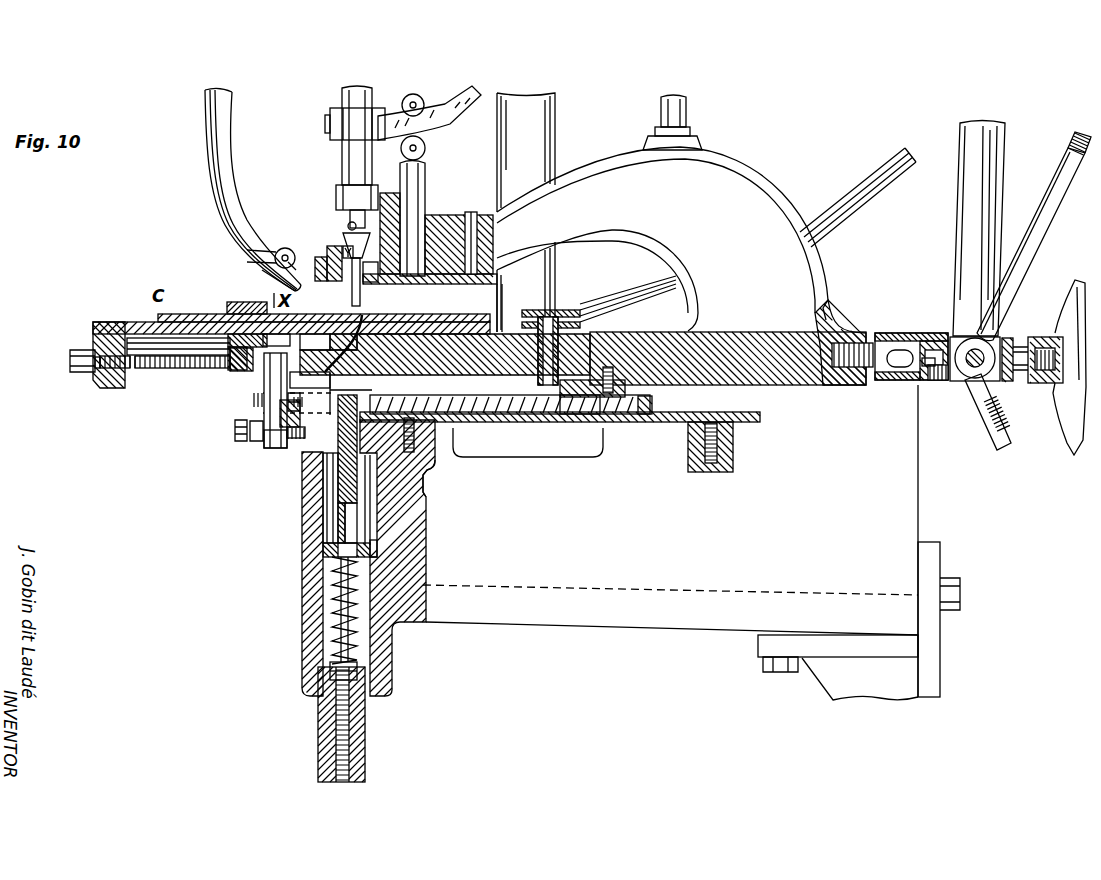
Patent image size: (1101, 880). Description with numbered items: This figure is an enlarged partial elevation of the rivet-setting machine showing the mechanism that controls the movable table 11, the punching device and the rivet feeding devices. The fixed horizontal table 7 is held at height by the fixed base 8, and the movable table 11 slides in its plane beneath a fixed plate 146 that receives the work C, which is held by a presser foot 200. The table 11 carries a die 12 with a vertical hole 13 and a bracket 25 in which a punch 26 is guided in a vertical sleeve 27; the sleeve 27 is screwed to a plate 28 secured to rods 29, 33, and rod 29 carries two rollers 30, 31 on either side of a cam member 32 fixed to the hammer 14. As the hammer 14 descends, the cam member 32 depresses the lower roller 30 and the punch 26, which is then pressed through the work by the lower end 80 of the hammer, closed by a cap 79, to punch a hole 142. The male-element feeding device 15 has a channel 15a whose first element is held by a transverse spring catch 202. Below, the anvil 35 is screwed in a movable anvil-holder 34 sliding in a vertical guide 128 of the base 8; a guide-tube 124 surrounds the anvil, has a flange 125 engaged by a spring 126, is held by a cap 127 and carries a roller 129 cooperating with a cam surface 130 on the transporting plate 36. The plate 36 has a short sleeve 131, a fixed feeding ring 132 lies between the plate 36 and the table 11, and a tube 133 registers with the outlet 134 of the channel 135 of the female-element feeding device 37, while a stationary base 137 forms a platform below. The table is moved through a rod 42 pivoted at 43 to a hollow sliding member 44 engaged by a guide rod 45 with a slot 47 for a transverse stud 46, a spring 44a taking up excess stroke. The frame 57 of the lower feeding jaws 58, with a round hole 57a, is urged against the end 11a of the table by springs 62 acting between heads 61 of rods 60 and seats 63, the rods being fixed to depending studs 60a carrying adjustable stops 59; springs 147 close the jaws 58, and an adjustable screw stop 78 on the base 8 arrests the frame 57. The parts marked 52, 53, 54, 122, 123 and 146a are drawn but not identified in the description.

The horizontal table 7 is at (838, 333).
The fixed base 8 is at (97, 336).
The movable table 11 is at (436, 330).
The end of movable table 11a is at (370, 362).
The die 12 is at (366, 300).
The vertical hole 13 is at (352, 304).
The hammer 14 is at (352, 158).
The rivet feeding device 15 is at (207, 137).
The channel 15a is at (262, 268).
The bracket 25 is at (598, 185).
The punch 26 is at (352, 291).
The vertical sleeve 27 is at (396, 276).
The plate 28 is at (428, 282).
The rod 29 is at (412, 202).
The lower roller 30 is at (426, 149).
The upper roller 31 is at (420, 98).
The cam member 32 is at (468, 93).
The rod 33 is at (468, 274).
The anvil-holder 34 is at (330, 729).
The anvil 35 is at (330, 510).
The transporting plate 36 is at (436, 395).
The rivet feeding device 37 is at (848, 196).
The rod of adjustable length 42 is at (1000, 403).
The pivot 43 is at (973, 365).
The hollow sliding member 44 is at (940, 384).
The spring 44a is at (932, 372).
The guide rod 45 is at (925, 345).
The transverse stud 46 is at (898, 350).
The slot 47 is at (912, 380).
The hand lever 52 is at (1042, 215).
The collar 53 is at (1008, 338).
The hand wheel 54 is at (1075, 317).
The frame 57 is at (265, 358).
The round hole 57a is at (267, 378).
The lower feeding jaws 58 is at (298, 333).
The adjustable stops 59 is at (305, 431).
The rods 60 is at (528, 415).
The depending studs 60a is at (273, 443).
The head 61 is at (650, 403).
The spring 62 is at (585, 415).
The seat 63 is at (326, 381).
The adjustable screw stop 78 is at (84, 372).
The cap 79 is at (338, 190).
The lower end of hammer 80 is at (348, 225).
The roller 122 is at (282, 248).
The block 123 is at (316, 258).
The guide-tube 124 is at (348, 517).
The flange 125 is at (330, 553).
The spring 126 is at (333, 622).
The cap 127 is at (372, 546).
The vertical guide 128 is at (430, 491).
The roller 129 is at (340, 478).
The cam surface 130 is at (300, 412).
The short sleeve 131 is at (345, 392).
The fixed feeding ring 132 is at (570, 375).
The tube 133 is at (538, 352).
The outlet 134 is at (548, 312).
The channel 135 is at (622, 300).
The stationary base 137 is at (625, 424).
The hole 142 is at (366, 270).
The fixed plate 146 is at (188, 314).
The cover plate end 146a is at (497, 332).
The springs 147 is at (256, 357).
The presser foot 200 is at (228, 308).
The transverse spring catch 202 is at (292, 266).